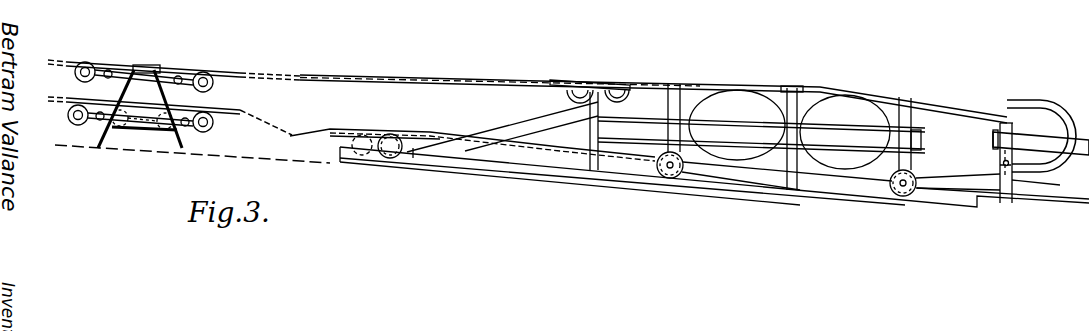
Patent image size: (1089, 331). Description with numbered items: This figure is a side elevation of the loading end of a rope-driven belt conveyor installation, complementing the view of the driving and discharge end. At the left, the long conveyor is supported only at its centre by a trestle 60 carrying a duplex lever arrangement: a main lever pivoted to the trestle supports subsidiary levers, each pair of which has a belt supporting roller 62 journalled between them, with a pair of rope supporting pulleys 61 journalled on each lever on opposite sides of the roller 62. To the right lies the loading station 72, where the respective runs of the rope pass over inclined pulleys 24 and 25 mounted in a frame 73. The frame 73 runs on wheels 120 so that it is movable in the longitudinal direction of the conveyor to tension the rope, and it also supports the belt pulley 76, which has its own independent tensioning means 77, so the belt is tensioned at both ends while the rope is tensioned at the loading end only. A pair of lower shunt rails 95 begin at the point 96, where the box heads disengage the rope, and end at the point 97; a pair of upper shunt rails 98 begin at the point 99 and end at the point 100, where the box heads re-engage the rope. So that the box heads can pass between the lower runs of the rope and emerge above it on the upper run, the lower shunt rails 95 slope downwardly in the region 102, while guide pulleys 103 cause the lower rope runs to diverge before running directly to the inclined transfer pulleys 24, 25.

The inclined pulley 24 is at (857, 117).
The inclined pulley 25 is at (733, 103).
The trestle 60 is at (150, 64).
The rope supporting pulleys 61 is at (127, 62).
The belt supporting roller 62 is at (187, 83).
The loading station 72 is at (788, 180).
The frame 73 is at (893, 160).
The belt pulley 76 is at (1003, 127).
The tensioning means 77 is at (1043, 173).
The lower shunt rails 95 is at (967, 178).
The point 96 is at (328, 138).
The point 97 is at (1010, 100).
The upper shunt rails 98 is at (817, 89).
The point 99 is at (1002, 162).
The point 100 is at (555, 80).
The region 102 is at (657, 160).
The guide pulleys 103 is at (556, 150).
The wheels 120 is at (903, 197).